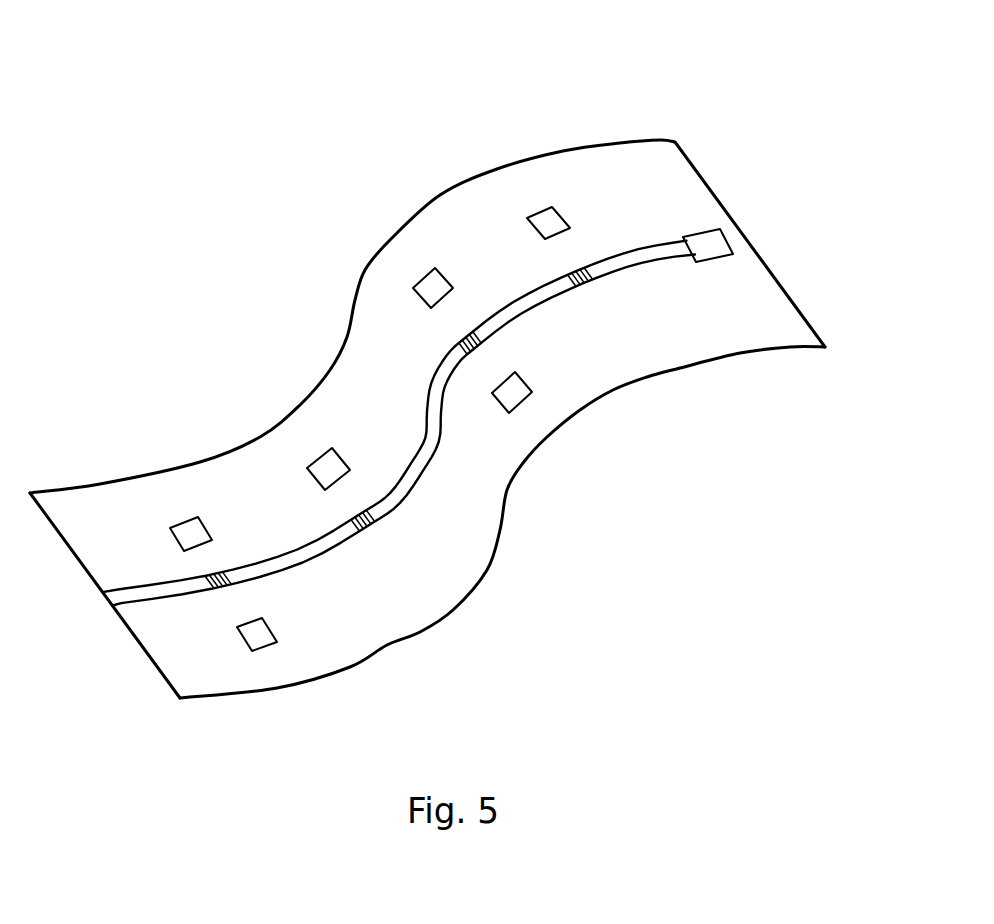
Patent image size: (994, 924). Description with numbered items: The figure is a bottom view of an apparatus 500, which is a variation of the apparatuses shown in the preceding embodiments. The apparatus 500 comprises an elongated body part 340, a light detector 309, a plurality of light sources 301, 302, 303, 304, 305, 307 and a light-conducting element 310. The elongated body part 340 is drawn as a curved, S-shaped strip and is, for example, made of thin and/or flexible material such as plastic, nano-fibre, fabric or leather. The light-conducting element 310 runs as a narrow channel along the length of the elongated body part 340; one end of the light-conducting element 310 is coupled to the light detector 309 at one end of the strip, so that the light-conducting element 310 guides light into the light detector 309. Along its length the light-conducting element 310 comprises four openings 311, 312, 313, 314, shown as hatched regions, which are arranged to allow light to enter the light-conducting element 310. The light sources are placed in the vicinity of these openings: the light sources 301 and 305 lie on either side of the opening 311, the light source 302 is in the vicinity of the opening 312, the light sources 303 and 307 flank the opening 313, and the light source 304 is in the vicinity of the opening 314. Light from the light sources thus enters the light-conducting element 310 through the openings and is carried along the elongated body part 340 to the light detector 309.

The apparatus 500 is at (704, 103).
The elongated body part 340 is at (578, 148).
The light source 301 is at (182, 522).
The light source 302 is at (318, 460).
The light source 303 is at (423, 282).
The light source 304 is at (535, 210).
The light source 305 is at (263, 648).
The light source 307 is at (522, 398).
The light detector 309 is at (720, 231).
The light-conducting element 310 is at (683, 262).
The opening 311 is at (232, 590).
The opening 312 is at (370, 528).
The opening 313 is at (477, 352).
The opening 314 is at (582, 287).